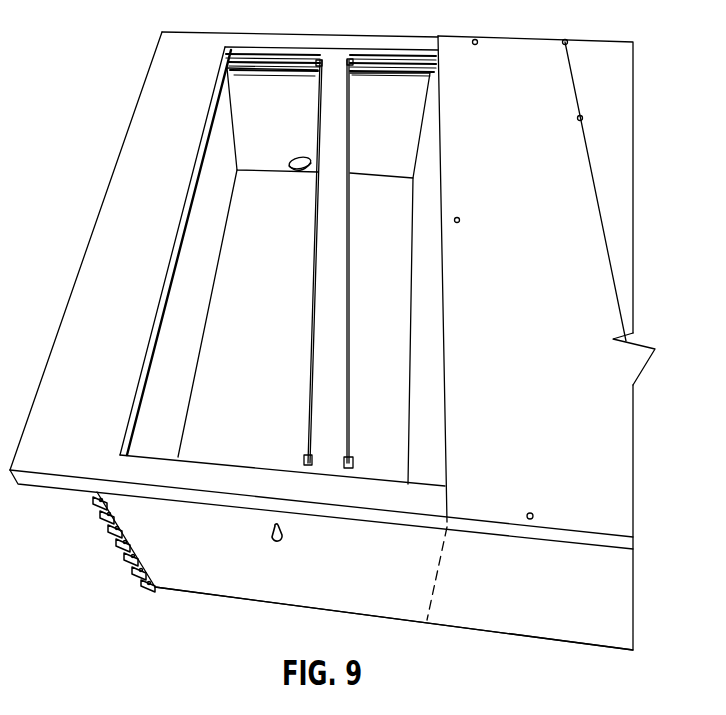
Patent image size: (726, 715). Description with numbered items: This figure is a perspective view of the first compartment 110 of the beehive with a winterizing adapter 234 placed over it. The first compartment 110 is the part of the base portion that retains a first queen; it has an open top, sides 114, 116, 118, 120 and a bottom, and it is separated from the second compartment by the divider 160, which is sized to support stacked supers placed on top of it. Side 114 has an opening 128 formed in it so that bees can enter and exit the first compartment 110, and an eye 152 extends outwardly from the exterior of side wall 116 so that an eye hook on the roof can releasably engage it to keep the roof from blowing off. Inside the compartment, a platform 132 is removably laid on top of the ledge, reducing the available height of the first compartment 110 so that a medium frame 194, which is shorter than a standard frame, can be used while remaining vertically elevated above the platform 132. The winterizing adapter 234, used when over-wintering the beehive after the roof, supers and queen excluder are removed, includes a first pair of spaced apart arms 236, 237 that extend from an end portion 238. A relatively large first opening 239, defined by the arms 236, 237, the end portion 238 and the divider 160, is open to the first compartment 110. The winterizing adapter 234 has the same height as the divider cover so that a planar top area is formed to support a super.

The arm 236 is at (408, 47).
The winterizing adapter 234 is at (115, 210).
The end portion 238 is at (120, 361).
The opening 128 is at (291, 162).
The side 114 is at (403, 143).
The first compartment 110 is at (208, 218).
The platform 132 is at (292, 262).
The first opening 239 is at (390, 210).
The divider 160 is at (547, 307).
The side 118 is at (176, 348).
The medium frame 194 is at (338, 340).
The side 120 is at (430, 367).
The arm 237 is at (433, 505).
The side wall 116 is at (212, 577).
The eye 152 is at (285, 538).